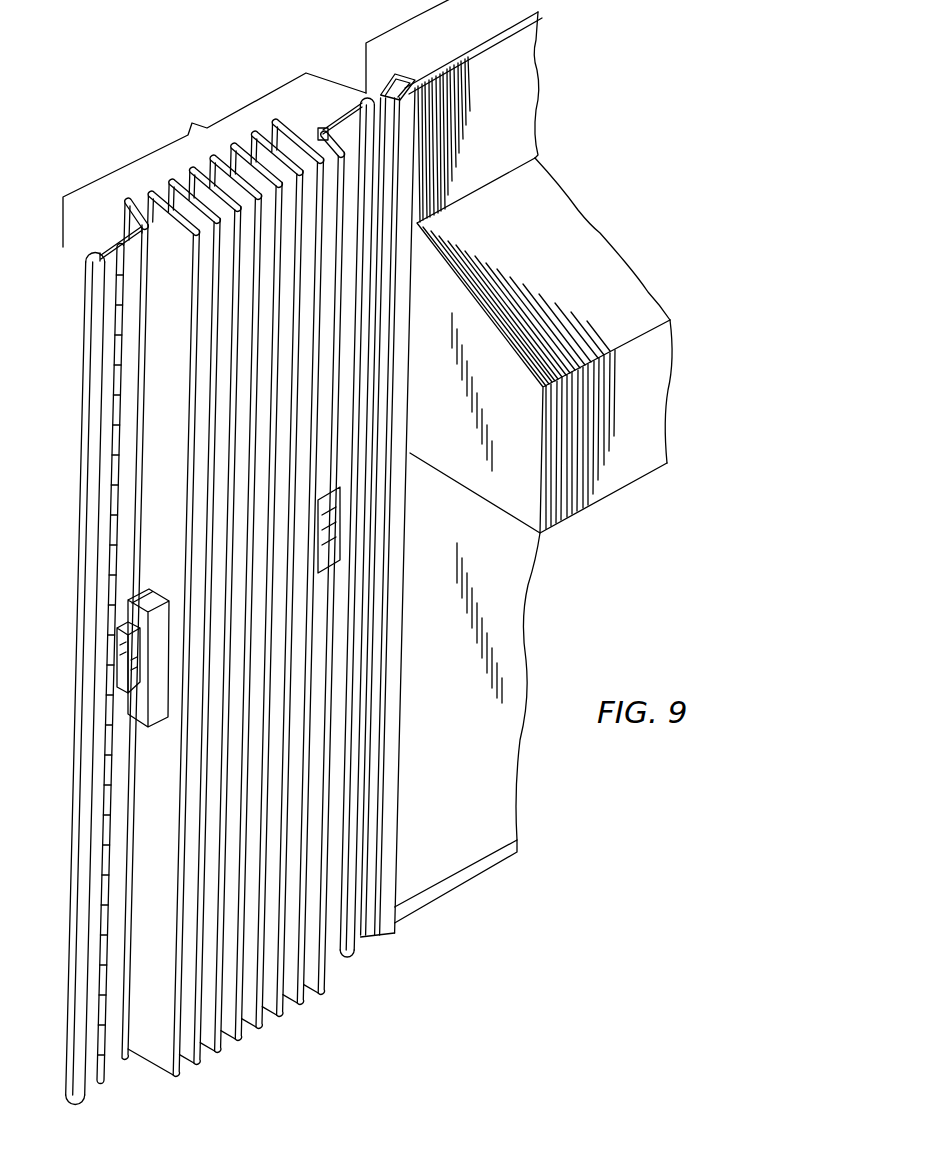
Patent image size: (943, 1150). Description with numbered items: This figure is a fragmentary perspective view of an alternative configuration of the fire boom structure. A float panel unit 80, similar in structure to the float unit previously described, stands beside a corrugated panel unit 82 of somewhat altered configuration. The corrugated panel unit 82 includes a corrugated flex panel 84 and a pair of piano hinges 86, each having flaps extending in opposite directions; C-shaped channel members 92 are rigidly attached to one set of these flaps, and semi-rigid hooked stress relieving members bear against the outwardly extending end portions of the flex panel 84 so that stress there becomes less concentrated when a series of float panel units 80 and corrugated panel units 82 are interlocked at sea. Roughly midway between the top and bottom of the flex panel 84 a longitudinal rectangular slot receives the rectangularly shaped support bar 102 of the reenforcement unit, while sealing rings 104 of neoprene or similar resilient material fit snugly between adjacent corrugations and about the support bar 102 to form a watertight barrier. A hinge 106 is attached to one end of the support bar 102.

The float panel unit 80 is at (413, 18).
The corrugated panel unit 82 is at (214, 160).
The corrugated flex panel 84 is at (250, 1003).
The piano hinges 86 is at (103, 1032).
The C-shaped channel members 92 is at (70, 1098).
The support bar 102 is at (137, 642).
The sealing rings 104 is at (138, 717).
The hinge 106 is at (110, 677).